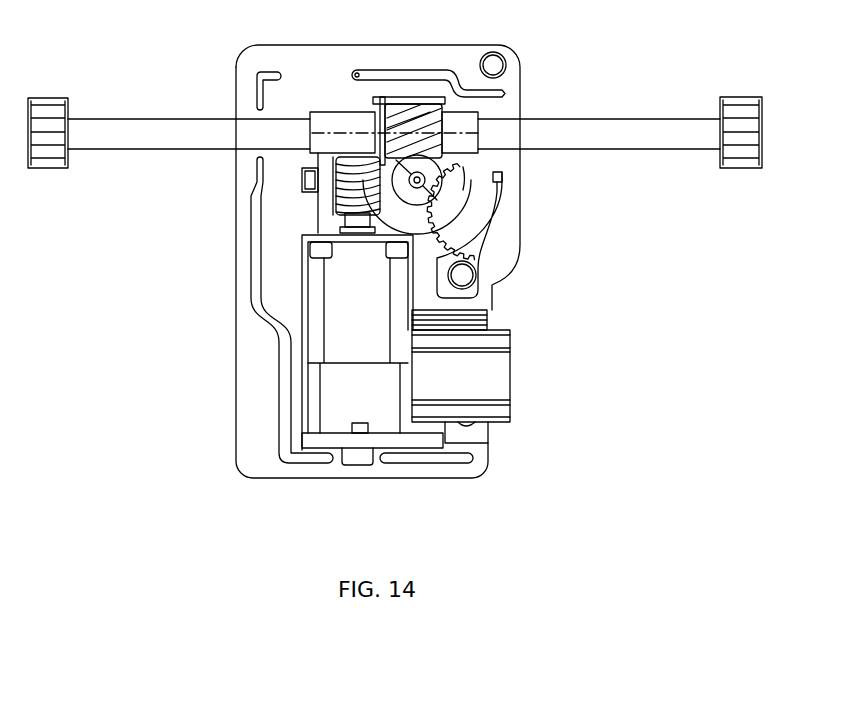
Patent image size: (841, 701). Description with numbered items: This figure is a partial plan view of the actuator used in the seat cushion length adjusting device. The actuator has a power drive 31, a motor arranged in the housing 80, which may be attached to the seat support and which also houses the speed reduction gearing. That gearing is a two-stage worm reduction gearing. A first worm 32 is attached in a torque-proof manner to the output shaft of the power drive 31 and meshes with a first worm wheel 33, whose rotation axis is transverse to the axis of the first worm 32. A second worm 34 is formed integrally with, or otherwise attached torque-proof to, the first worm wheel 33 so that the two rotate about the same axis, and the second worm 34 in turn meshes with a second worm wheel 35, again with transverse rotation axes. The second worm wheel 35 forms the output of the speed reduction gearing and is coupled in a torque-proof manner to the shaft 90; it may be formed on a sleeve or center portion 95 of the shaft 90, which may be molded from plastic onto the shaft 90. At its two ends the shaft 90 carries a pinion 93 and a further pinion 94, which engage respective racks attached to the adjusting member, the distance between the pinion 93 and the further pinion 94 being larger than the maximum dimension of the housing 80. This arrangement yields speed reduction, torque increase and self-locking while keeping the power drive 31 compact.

The power drive 31 is at (320, 342).
The first worm 32 is at (338, 203).
The first worm wheel 33 is at (453, 219).
The second worm 34 is at (420, 178).
The second worm wheel 35 is at (433, 97).
The housing 80 is at (252, 467).
The shaft 90 is at (660, 118).
The pinion 93 is at (68, 167).
The further pinion 94 is at (719, 168).
The center portion of the shaft 95 is at (348, 110).